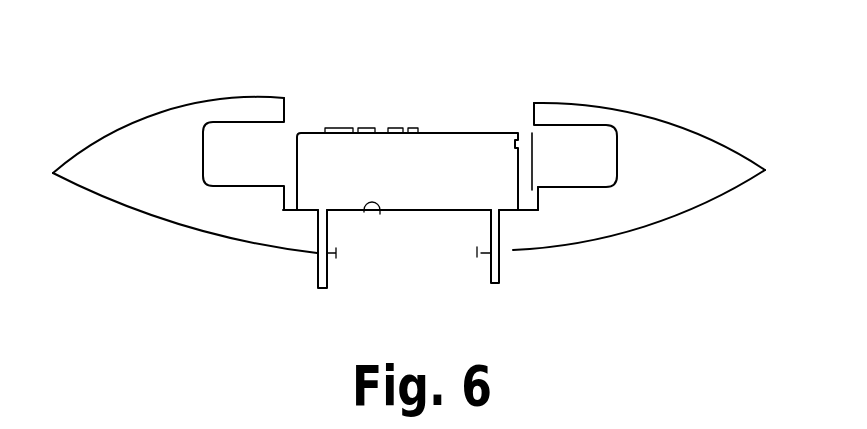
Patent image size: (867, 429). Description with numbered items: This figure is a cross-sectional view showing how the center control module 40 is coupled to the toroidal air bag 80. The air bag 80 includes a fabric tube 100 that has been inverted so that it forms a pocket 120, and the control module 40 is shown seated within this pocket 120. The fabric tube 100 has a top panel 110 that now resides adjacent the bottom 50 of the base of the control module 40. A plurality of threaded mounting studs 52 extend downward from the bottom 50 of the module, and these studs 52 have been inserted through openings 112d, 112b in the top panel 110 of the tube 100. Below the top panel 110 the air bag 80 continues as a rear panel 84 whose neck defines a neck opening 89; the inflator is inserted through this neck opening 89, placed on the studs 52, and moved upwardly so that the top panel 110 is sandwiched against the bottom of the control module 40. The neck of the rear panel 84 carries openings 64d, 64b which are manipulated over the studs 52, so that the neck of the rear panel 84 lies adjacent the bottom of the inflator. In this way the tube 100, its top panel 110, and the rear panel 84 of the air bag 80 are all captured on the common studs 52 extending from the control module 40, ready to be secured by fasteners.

The air bag 80 is at (150, 116).
The rear panel 84 is at (700, 208).
The control module 40 is at (450, 128).
The fabric tube 100 is at (527, 132).
The top panel 110 is at (518, 220).
The pocket 120 is at (532, 190).
The bottom 50 is at (362, 216).
The opening 112d is at (310, 219).
The opening 112b is at (482, 217).
The threaded mounting stud 52 is at (314, 272).
The opening 64d is at (316, 253).
The opening 64b is at (502, 242).
The neck opening 89 is at (478, 254).